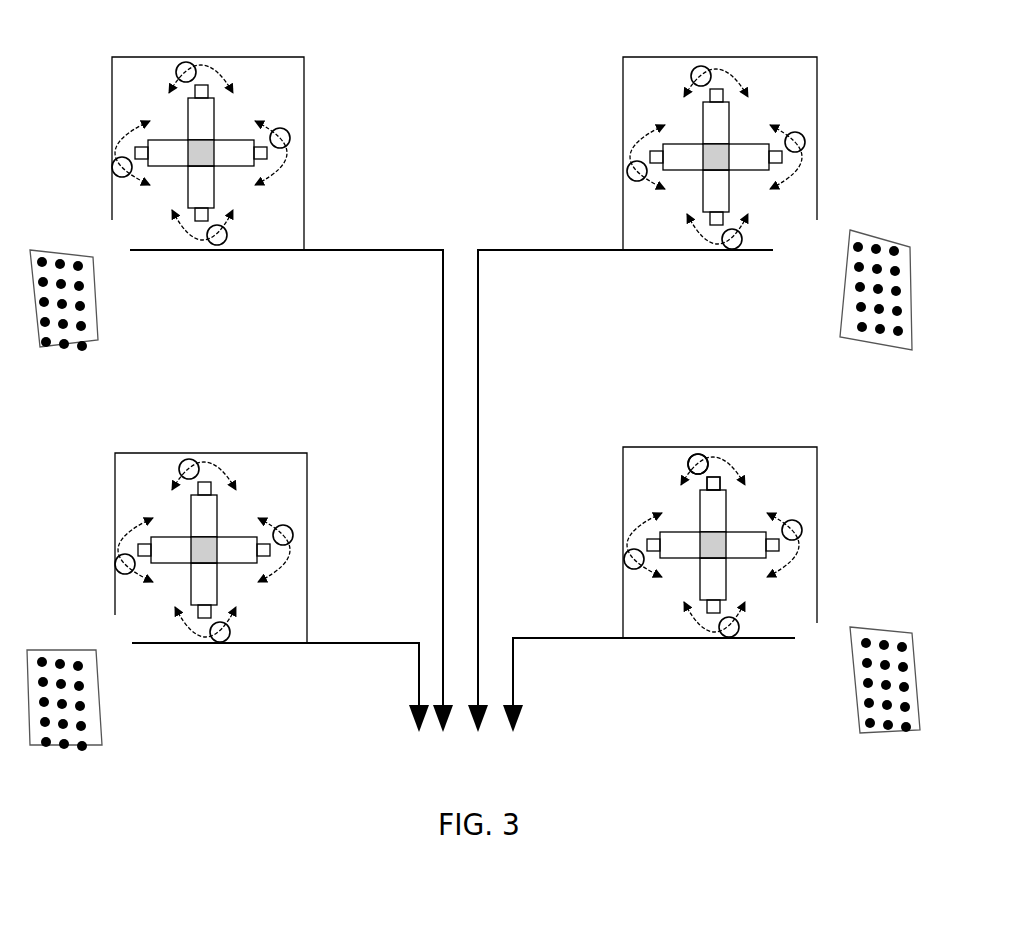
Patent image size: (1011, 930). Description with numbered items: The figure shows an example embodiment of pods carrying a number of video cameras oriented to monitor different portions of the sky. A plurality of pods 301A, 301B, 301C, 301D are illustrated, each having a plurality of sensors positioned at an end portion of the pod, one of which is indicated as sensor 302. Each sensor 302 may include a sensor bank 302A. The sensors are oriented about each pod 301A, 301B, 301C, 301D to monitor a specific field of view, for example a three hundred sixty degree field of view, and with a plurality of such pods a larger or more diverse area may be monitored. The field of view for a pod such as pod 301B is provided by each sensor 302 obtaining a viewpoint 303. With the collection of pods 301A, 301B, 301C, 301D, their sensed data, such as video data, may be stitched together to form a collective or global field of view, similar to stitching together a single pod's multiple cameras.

The pod 301A is at (827, 97).
The pod 301B is at (767, 510).
The pod 301C is at (321, 128).
The pod 301D is at (321, 540).
The sensor 302 is at (720, 475).
The sensor bank 302A is at (890, 220).
The viewpoint 303 is at (680, 467).